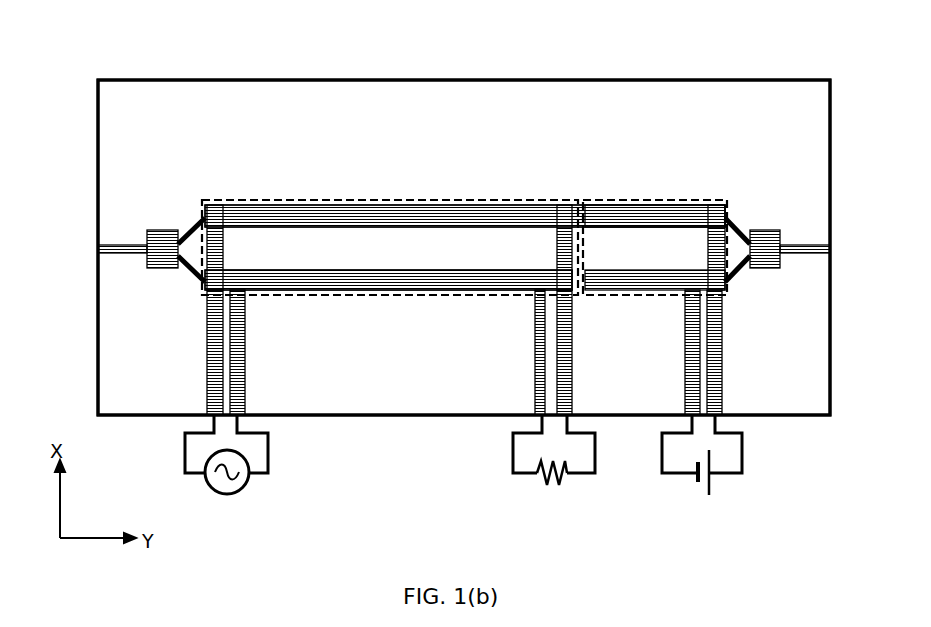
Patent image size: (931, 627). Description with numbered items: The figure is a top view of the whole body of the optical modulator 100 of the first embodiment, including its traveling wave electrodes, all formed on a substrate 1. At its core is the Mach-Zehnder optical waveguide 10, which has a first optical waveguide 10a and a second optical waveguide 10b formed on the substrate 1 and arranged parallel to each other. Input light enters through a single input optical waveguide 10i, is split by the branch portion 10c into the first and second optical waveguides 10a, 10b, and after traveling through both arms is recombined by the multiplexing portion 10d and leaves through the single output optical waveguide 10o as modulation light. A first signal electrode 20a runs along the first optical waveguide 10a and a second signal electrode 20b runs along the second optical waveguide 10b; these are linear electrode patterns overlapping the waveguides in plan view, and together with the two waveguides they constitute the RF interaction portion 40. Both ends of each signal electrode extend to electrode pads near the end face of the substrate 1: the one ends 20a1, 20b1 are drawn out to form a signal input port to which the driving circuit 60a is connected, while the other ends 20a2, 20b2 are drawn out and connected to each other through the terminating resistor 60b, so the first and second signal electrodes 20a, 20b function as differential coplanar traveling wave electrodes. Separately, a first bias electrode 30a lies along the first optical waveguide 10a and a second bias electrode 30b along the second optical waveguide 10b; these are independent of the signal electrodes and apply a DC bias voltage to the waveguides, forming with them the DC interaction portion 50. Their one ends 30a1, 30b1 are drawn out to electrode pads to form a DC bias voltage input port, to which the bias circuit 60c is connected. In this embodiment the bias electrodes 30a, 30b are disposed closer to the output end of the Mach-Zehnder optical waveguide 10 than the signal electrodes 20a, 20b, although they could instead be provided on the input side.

The optical modulator 100 is at (148, 95).
The substrate 1 is at (765, 100).
The Mach-Zehnder optical waveguide 10 is at (465, 265).
The first optical waveguide 10a is at (390, 280).
The second optical waveguide 10b is at (312, 218).
The branch portion 10c is at (160, 232).
The multiplexing portion 10d is at (760, 232).
The input optical waveguide 10i is at (120, 245).
The output optical waveguide 10o is at (808, 238).
The first signal electrode 20a is at (468, 285).
The second signal electrode 20b is at (422, 208).
The one end of first signal electrode 20a1 is at (237, 407).
The other end of first signal electrode 20a2 is at (540, 405).
The one end of second signal electrode 20b1 is at (212, 407).
The other end of second signal electrode 20b2 is at (567, 407).
The first bias electrode 30a is at (640, 287).
The second bias electrode 30b is at (685, 208).
The one end of first bias electrode 30a1 is at (690, 407).
The one end of second bias electrode 30b1 is at (718, 407).
The RF interaction portion 40 is at (368, 202).
The DC interaction portion 50 is at (640, 203).
The driving circuit 60a is at (232, 488).
The terminating resistor 60b is at (555, 475).
The bias circuit 60c is at (710, 481).